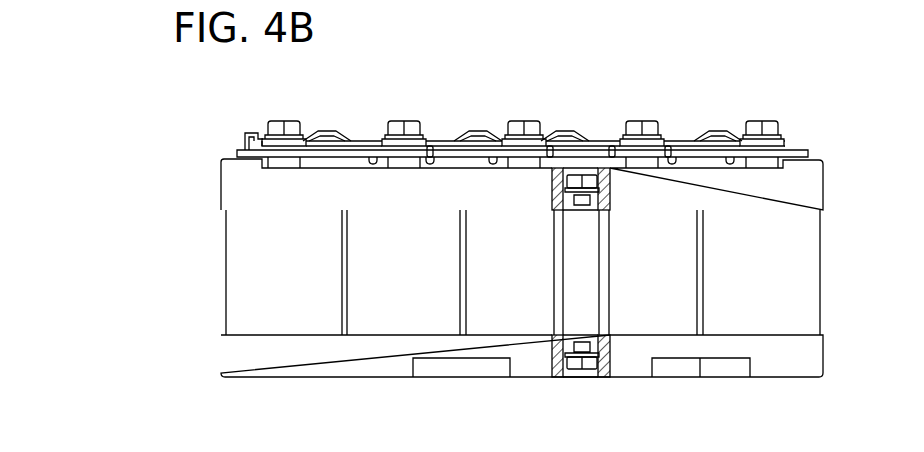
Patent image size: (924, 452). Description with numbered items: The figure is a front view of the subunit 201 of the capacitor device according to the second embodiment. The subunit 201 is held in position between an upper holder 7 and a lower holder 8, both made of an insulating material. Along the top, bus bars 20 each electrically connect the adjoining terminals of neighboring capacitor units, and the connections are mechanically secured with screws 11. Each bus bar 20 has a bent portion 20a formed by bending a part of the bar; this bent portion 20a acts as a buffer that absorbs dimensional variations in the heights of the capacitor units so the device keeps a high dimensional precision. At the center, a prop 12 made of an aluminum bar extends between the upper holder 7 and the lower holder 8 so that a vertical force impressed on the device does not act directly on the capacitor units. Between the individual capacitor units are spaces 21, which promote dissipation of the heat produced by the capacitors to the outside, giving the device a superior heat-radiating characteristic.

The upper holder 7 is at (815, 185).
The lower holder 8 is at (810, 357).
The spaces 21 is at (705, 285).
The prop 12 is at (602, 257).
The subunit 201 is at (825, 152).
The bus bars 20 is at (363, 142).
The bent portion 20a is at (327, 132).
The screws 11 is at (280, 122).